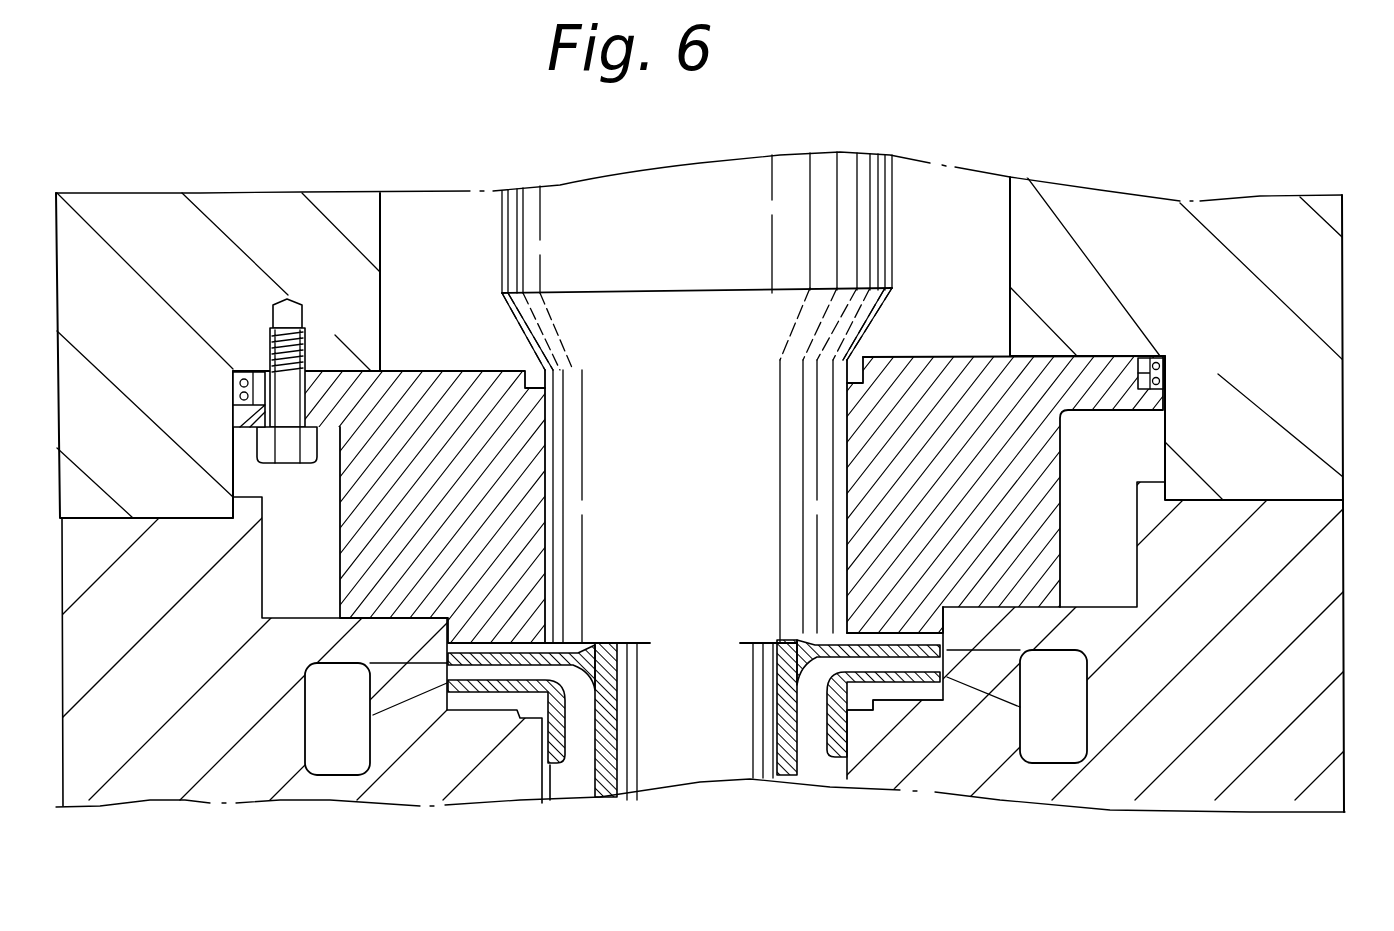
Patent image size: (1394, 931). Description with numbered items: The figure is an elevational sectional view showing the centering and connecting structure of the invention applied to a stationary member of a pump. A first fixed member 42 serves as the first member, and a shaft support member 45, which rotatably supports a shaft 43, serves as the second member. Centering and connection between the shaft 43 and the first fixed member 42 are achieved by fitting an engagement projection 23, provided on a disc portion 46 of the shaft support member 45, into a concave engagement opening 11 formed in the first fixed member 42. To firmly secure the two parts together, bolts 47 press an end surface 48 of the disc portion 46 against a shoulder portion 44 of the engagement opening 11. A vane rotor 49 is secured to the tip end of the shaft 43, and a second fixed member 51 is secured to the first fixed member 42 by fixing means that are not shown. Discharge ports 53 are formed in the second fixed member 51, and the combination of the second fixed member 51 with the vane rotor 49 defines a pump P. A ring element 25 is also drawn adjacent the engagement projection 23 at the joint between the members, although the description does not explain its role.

The concave engagement opening 11 is at (1167, 423).
The engagement projection 23 is at (250, 386).
The backup ring 25 is at (236, 371).
The first fixed member 42 is at (1250, 200).
The shaft 43 is at (845, 161).
The shoulder portion 44 is at (1007, 367).
The shaft support member 45 is at (412, 368).
The disc portion 46 is at (1093, 377).
The bolt 47 is at (303, 318).
The end surface 48 is at (893, 357).
The vane rotor 49 is at (602, 772).
The second fixed member 51 is at (1320, 588).
The discharge ports 53 is at (332, 765).
The pump P is at (874, 720).